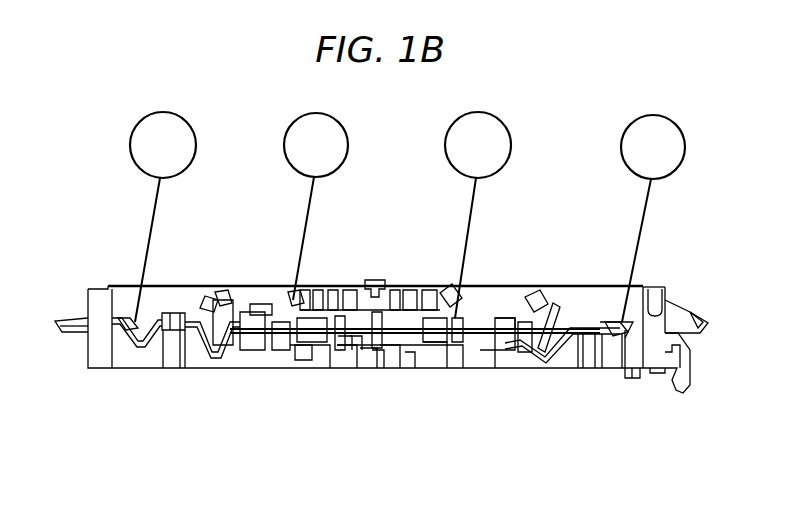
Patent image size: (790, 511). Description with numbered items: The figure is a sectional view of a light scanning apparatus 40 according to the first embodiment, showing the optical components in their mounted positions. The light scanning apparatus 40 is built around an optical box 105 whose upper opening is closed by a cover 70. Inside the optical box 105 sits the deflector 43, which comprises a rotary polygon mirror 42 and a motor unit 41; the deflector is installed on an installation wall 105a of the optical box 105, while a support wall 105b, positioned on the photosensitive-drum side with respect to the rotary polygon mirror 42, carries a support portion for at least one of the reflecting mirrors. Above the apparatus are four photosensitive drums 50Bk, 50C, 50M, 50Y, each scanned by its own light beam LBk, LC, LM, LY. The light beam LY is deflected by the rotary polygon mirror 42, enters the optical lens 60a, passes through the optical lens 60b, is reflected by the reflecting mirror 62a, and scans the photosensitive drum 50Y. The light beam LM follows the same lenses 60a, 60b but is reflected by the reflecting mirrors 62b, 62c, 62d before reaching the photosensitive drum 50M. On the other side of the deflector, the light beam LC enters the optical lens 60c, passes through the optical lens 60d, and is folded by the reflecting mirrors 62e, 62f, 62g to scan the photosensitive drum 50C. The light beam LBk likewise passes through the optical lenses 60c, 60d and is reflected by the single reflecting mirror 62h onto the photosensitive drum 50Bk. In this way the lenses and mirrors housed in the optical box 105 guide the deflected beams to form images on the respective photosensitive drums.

The light scanning apparatus 40 is at (100, 382).
The photosensitive drum 50Bk is at (143, 138).
The photosensitive drum 50C is at (306, 136).
The photosensitive drum 50M is at (463, 136).
The photosensitive drum 50Y is at (640, 138).
The light beam LBk is at (158, 198).
The light beam LC is at (312, 197).
The light beam LM is at (476, 197).
The light beam LY is at (650, 197).
The reflecting mirror 62h is at (125, 322).
The reflecting mirror 62e is at (210, 297).
The reflecting mirror 62f is at (220, 292).
The optical lens 60d is at (258, 304).
The reflecting mirror 62g is at (295, 292).
The cover 70 is at (330, 283).
The reflecting mirror 62d is at (450, 302).
The optical lens 60b is at (502, 322).
The reflecting mirror 62c is at (532, 292).
The reflecting mirror 62b is at (552, 300).
The reflecting mirror 62a is at (618, 322).
The optical lens 60c is at (300, 350).
The motor unit 41 is at (345, 340).
The rotary polygon mirror 42 is at (352, 340).
The deflector 43 is at (203, 448).
The installation wall 105a is at (378, 372).
The optical lens 60a is at (430, 370).
The optical box 105 is at (442, 378).
The support wall 105b is at (485, 372).